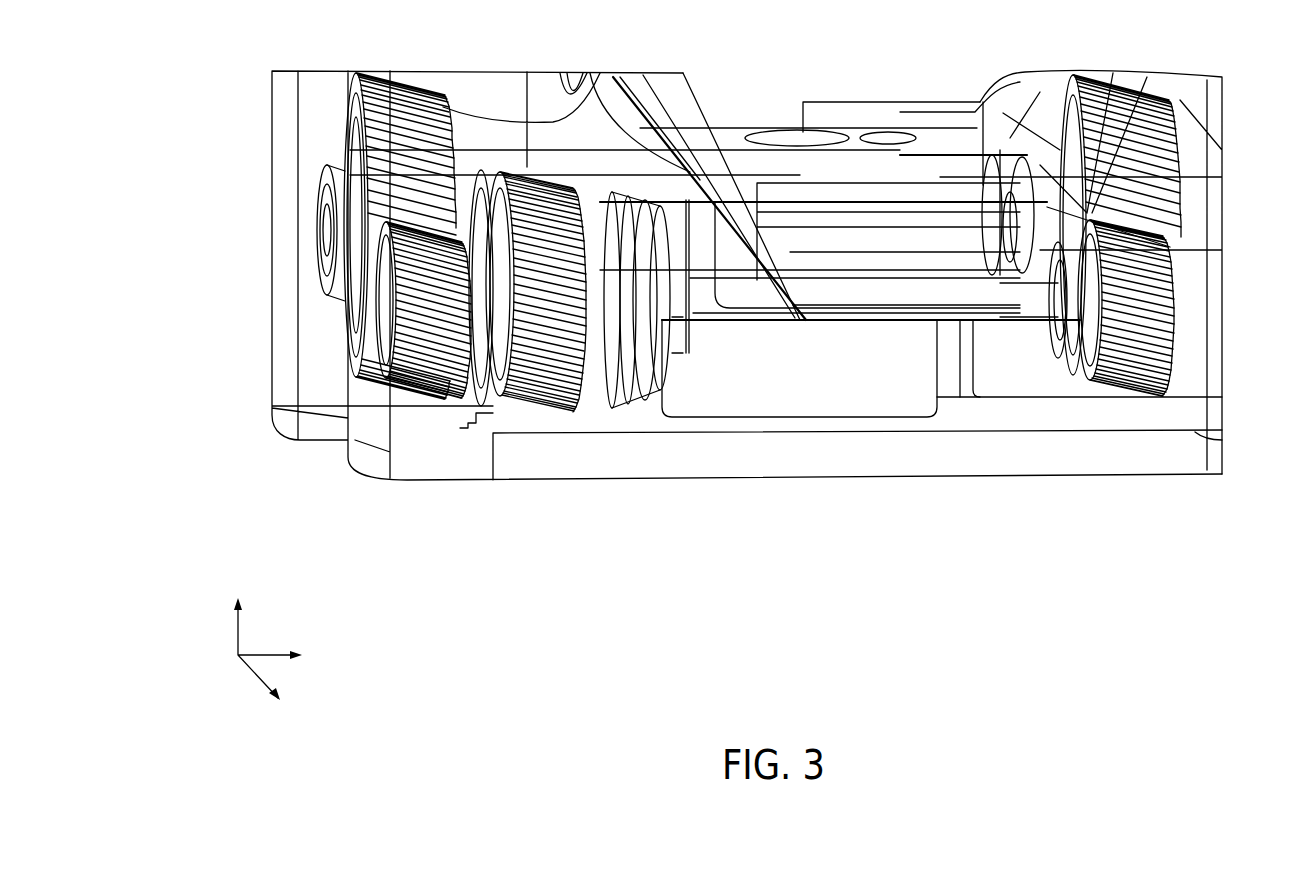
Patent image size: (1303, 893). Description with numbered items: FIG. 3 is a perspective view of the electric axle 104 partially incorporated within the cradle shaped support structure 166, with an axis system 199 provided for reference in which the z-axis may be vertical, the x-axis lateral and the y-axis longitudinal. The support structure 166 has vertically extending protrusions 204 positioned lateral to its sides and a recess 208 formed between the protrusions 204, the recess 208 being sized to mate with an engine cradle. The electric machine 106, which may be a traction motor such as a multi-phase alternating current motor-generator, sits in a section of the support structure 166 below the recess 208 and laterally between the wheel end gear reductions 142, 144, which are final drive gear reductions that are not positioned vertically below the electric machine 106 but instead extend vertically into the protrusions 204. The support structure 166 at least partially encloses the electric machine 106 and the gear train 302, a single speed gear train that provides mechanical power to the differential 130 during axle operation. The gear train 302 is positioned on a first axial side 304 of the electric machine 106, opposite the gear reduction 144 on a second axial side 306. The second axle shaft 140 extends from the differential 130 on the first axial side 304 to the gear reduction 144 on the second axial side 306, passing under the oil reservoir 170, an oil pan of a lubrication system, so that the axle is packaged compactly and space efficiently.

The electric axle 104 is at (740, 128).
The electric machine 106 is at (820, 405).
The differential 130 is at (574, 382).
The second axle shaft 140 is at (1043, 300).
The wheel end gear reduction 142 is at (410, 420).
The wheel end gear reduction 144 is at (1124, 412).
The support structure 166 is at (1198, 445).
The oil reservoir 170 is at (895, 165).
The axis system 199 is at (290, 620).
The vertically extending protrusions 204 is at (313, 103).
The recess 208 is at (795, 106).
The gear train 302 is at (513, 150).
The first axial side 304 is at (652, 414).
The second axial side 306 is at (995, 410).